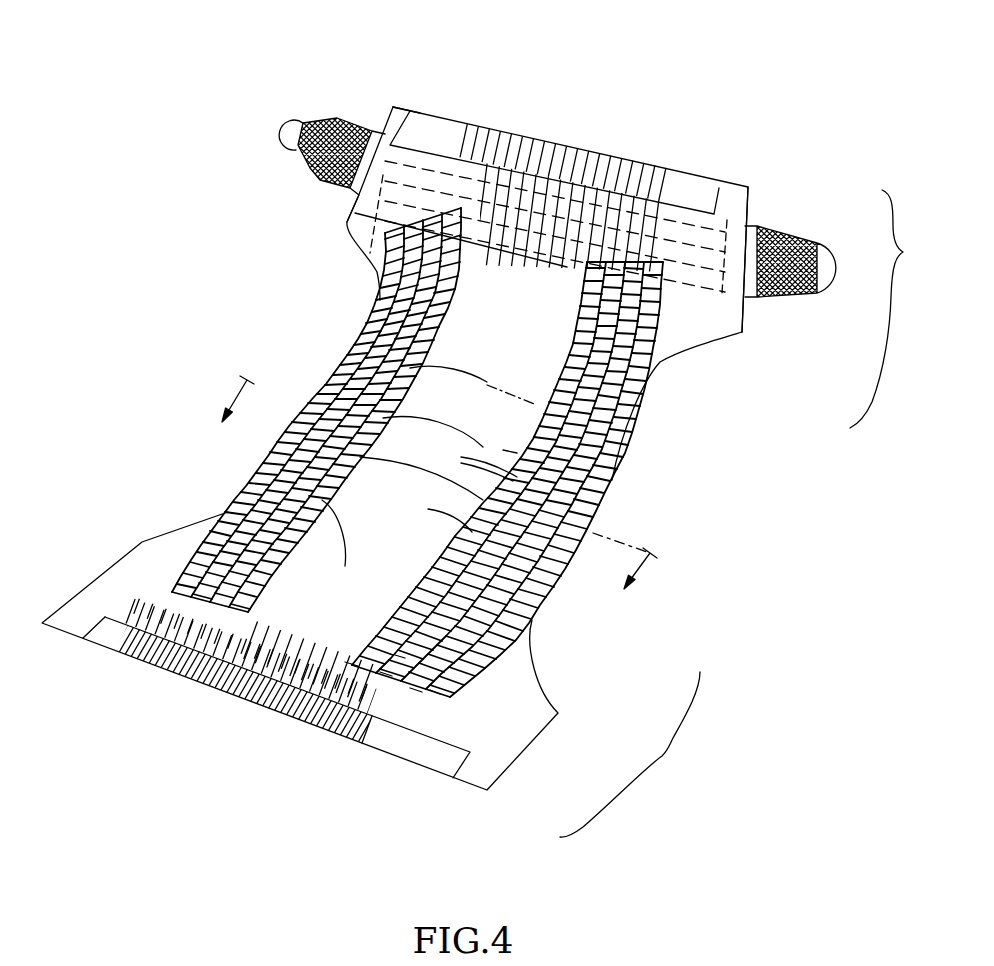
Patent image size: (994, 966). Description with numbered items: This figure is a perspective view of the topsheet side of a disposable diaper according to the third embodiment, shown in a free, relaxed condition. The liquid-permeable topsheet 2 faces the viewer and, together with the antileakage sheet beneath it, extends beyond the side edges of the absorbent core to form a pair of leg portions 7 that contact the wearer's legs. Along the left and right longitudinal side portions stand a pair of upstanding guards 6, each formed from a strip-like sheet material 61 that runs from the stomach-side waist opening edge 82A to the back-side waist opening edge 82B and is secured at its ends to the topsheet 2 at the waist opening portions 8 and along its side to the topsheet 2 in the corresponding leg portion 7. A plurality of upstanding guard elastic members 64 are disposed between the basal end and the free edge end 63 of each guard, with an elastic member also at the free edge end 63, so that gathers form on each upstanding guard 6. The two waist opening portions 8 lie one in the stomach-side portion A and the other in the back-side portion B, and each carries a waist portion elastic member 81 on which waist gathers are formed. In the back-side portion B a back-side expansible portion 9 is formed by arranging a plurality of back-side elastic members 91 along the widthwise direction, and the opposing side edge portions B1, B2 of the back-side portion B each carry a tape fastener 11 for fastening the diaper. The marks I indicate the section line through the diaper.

The topsheet 2 is at (232, 518).
The upstanding guard 6 is at (563, 367).
The strip-like sheet material 61 is at (366, 467).
The free edge end 63 is at (530, 437).
The upstanding guard elastic member 64 is at (377, 427).
The leg portion 7 is at (302, 422).
The waist opening portion 8 is at (533, 157).
The waist portion elastic member 81 is at (685, 190).
The stomach-side waist opening edge 82A is at (270, 712).
The back-side waist opening edge 82B is at (593, 160).
The back-side expansible portion 9 is at (370, 200).
The back-side elastic member 91 is at (373, 259).
The tape fastener 11 is at (330, 118).
The stomach-side portion A is at (630, 754).
The back-side portion B is at (890, 309).
The side edge portion of the back-side portion B1 is at (752, 208).
The side edge portion of the back-side portion B2 is at (385, 105).
The section line I- I is at (427, 498).